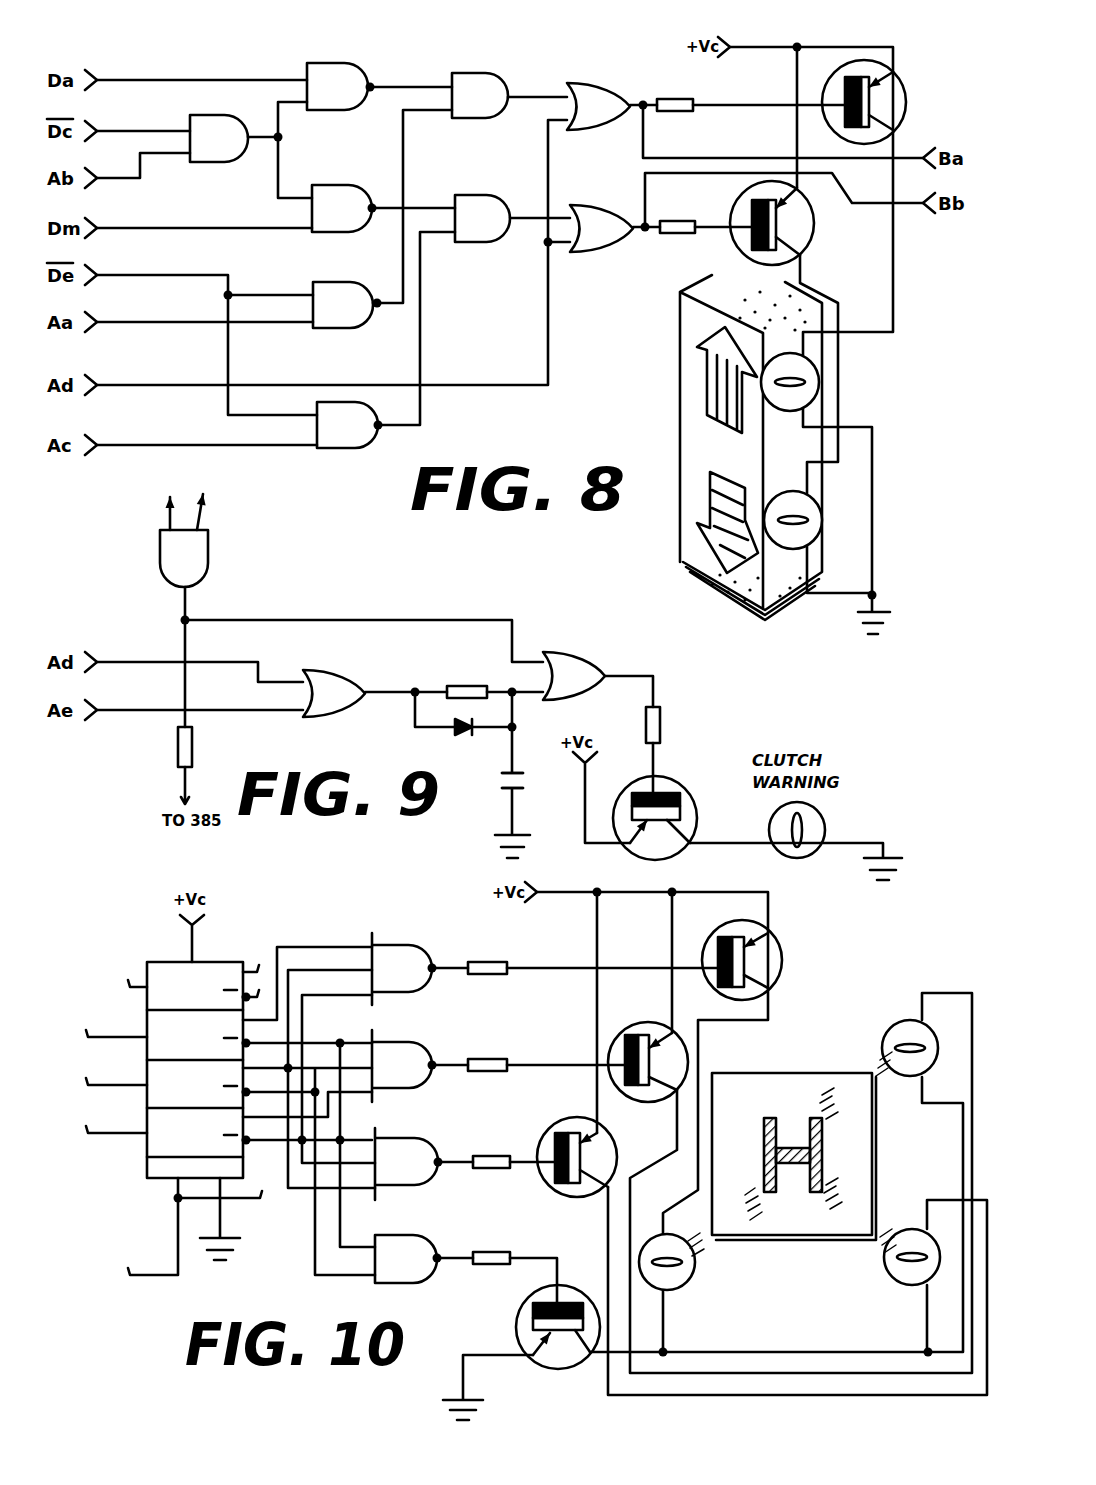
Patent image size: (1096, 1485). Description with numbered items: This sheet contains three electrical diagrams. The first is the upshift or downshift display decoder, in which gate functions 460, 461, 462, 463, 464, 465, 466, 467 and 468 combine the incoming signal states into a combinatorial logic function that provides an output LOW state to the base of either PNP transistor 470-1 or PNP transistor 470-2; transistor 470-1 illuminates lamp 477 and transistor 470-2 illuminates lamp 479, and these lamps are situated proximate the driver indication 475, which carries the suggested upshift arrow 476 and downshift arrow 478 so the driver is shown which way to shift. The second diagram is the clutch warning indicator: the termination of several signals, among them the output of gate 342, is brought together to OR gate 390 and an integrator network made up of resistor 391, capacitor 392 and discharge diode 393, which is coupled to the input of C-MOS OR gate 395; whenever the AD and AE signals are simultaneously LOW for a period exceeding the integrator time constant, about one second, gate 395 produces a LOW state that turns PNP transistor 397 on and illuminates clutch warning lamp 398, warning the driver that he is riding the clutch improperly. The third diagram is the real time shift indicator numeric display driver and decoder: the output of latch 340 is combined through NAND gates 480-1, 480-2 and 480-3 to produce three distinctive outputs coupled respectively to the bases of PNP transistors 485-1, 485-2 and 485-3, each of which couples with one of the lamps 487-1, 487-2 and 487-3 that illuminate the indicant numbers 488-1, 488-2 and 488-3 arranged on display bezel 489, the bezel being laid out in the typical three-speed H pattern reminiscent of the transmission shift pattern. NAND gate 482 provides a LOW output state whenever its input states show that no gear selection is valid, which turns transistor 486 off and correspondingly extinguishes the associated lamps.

In FIG. 8, the gate function 460 is at (213, 160).
In FIG. 8, the gate function 461 is at (350, 72).
In FIG. 8, the gate function 462 is at (348, 194).
In FIG. 8, the gate function 463 is at (350, 288).
In FIG. 8, the gate function 464 is at (352, 447).
In FIG. 8, the gate function 465 is at (495, 78).
In FIG. 8, the gate function 466 is at (490, 197).
In FIG. 8, the gate function 467 is at (597, 95).
In FIG. 8, the gate function 468 is at (585, 210).
In FIG. 8, the PNP transistor 470-1 is at (888, 95).
In FIG. 8, the PNP transistor 470-2 is at (738, 206).
In FIG. 8, the driver indication 475 is at (670, 347).
In FIG. 8, the upshift arrow indicia 476 is at (715, 397).
In FIG. 8, the lamp 477 is at (770, 410).
In FIG. 8, the downshift arrow indicia 478 is at (712, 500).
In FIG. 8, the lamp 479 is at (790, 551).
In FIG. 9, the AND gate 342 is at (201, 549).
In FIG. 9, the OR gate 390 is at (345, 680).
In FIG. 9, the resistor 391 is at (472, 684).
In FIG. 9, the capacitor 392 is at (503, 790).
In FIG. 9, the discharge diode 393 is at (452, 732).
In FIG. 9, the C-MOS OR gate 395 is at (583, 665).
In FIG. 9, the PNP transistor 397 is at (678, 785).
In FIG. 9, the clutch warning lamp 398 is at (827, 830).
In FIG. 10, the latch 340 is at (183, 974).
In FIG. 10, the NAND gate 480-1 is at (410, 958).
In FIG. 10, the NAND gate 480-2 is at (420, 1055).
In FIG. 10, the NAND gate 480-3 is at (422, 1153).
In FIG. 10, the NAND gate 482 is at (415, 1250).
In FIG. 10, the PNP transistor 485-1 is at (782, 952).
In FIG. 10, the PNP transistor 485-2 is at (642, 1028).
In FIG. 10, the PNP transistor 485-3 is at (570, 1125).
In FIG. 10, the transistor 486 is at (517, 1337).
In FIG. 10, the lamp 487-1 is at (690, 1276).
In FIG. 10, the lamp 487-2 is at (888, 1038).
In FIG. 10, the lamp 487-3 is at (903, 1275).
In FIG. 10, the indicant number 488-1 is at (753, 1224).
In FIG. 10, the indicant number 488-2 is at (833, 1088).
In FIG. 10, the indicant number 488-3 is at (856, 1180).
In FIG. 10, the display bezel 489 is at (786, 1068).